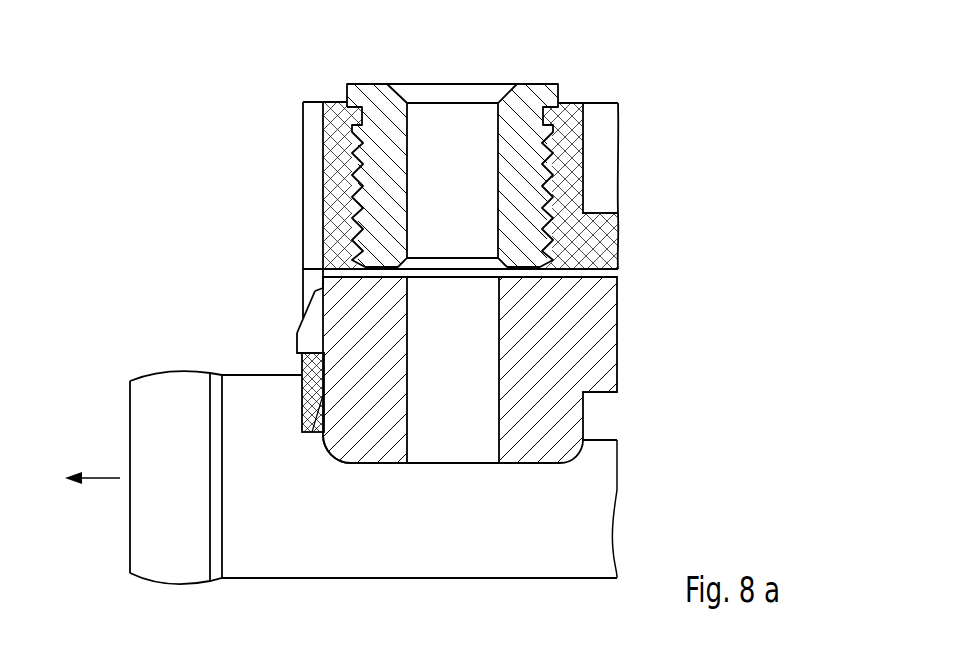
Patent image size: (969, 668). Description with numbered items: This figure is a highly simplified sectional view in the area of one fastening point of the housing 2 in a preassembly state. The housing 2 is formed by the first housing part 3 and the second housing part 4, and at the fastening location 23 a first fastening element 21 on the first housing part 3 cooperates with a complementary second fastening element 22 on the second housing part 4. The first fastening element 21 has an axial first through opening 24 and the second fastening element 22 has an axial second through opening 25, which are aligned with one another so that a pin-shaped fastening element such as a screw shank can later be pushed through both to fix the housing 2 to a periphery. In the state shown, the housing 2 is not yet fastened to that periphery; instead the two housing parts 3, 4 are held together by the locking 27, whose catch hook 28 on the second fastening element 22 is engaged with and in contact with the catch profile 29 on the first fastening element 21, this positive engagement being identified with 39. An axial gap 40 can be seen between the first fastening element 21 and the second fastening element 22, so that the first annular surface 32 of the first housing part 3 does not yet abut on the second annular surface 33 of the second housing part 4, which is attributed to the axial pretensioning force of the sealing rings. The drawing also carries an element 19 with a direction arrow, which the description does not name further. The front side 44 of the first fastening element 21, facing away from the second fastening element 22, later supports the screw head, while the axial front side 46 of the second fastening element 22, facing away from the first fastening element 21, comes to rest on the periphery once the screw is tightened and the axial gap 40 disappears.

The housing 2 is at (695, 292).
The first housing part 3 is at (622, 342).
The second housing part 4 is at (627, 221).
The pipe 19 is at (148, 447).
The first fastening element 21 is at (315, 298).
The second fastening element 22 is at (330, 182).
The fastening location 23 is at (288, 253).
The first through opening 24 is at (428, 466).
The second through opening 25 is at (409, 132).
The locking 27 is at (287, 337).
The catch hook 28 is at (308, 434).
The catch profile 29 is at (303, 327).
The first annular surface 32 is at (533, 256).
The second annular surface 33 is at (533, 268).
The positive engagement 39 is at (322, 316).
The axial gap 40 is at (598, 274).
The front side 44 is at (367, 464).
The axial front side 46 is at (362, 83).